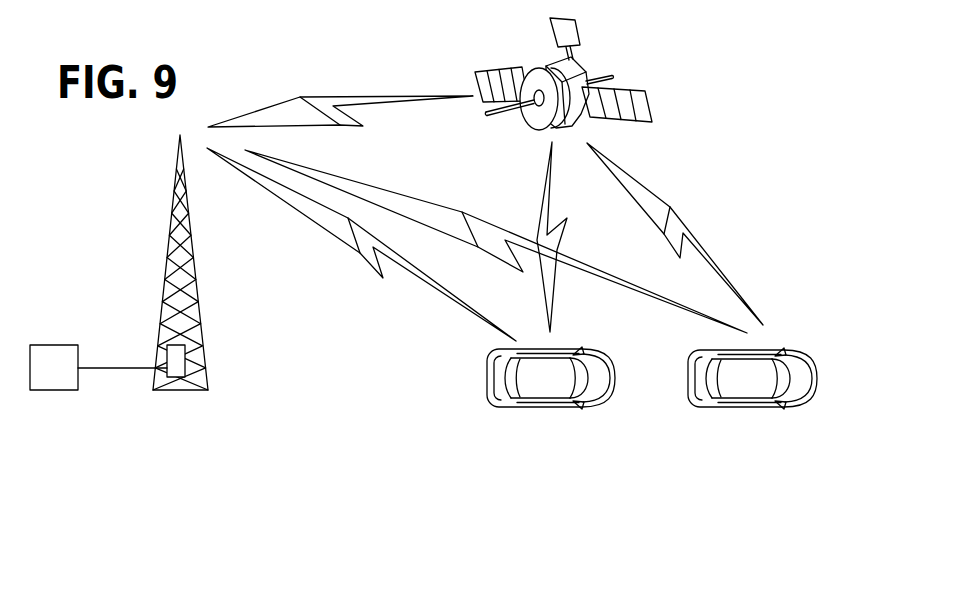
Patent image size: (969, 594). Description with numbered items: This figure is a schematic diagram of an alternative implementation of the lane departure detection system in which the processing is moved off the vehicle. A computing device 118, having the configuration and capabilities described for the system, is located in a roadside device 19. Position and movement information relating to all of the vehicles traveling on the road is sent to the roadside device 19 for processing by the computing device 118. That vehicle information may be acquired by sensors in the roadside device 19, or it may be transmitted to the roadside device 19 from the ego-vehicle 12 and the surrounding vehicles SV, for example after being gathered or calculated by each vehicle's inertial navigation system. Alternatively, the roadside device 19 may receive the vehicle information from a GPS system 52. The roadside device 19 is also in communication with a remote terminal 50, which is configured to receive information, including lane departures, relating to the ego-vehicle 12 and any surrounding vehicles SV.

The GPS system 52 is at (587, 65).
The roadside device 19 is at (173, 208).
The computing device 118 is at (177, 345).
The remote terminal 50 is at (53, 345).
The ego-vehicle 12 is at (548, 408).
The surrounding vehicles SV is at (748, 407).